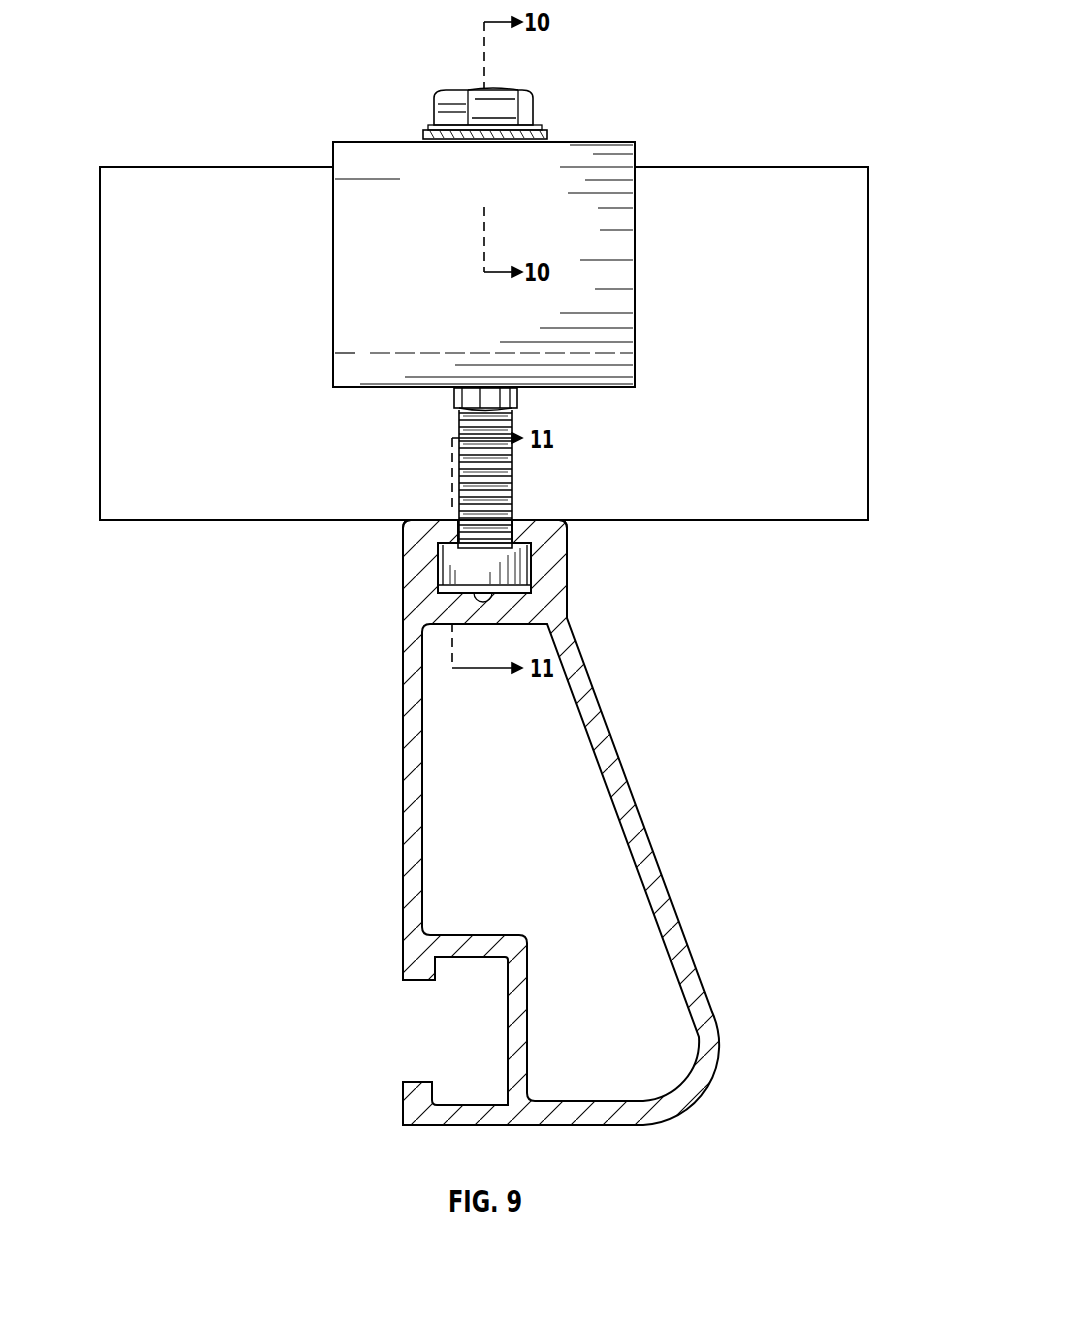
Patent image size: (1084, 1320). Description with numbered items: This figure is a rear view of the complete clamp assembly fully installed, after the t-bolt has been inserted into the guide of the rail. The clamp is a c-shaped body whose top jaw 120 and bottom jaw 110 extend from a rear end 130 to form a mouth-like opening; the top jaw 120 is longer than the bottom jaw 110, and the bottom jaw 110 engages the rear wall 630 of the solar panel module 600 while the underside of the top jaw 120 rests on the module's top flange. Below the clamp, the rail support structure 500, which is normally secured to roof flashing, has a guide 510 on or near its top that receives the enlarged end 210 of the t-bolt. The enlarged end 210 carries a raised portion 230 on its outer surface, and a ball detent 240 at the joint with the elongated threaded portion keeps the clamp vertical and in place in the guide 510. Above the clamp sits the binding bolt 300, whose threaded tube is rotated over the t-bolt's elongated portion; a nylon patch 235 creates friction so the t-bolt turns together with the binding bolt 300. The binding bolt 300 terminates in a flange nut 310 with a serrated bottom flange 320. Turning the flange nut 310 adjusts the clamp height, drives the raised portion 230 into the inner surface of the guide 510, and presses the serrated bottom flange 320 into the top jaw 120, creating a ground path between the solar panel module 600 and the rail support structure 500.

The bottom jaw 110 is at (608, 388).
The top jaw 120 is at (372, 140).
The rear end 130 is at (635, 273).
The enlarged end 210 is at (437, 560).
The raised portion 230 is at (518, 548).
The nylon patch 235 is at (460, 462).
The ball detent 240 is at (492, 587).
The binding bolt 300 is at (452, 397).
The flange nut 310 is at (520, 90).
The serrated bottom flange 320 is at (547, 136).
The rail support structure 500 is at (652, 850).
The guide 510 is at (567, 560).
The solar panel module 600 is at (838, 510).
The rear wall 630 is at (868, 247).